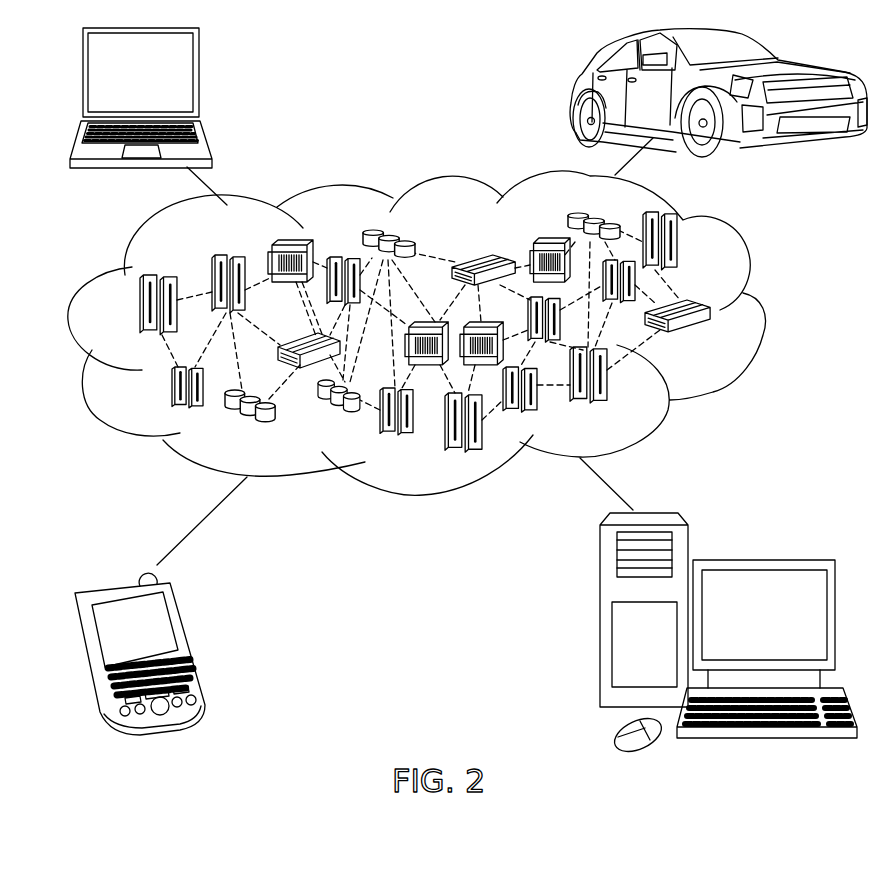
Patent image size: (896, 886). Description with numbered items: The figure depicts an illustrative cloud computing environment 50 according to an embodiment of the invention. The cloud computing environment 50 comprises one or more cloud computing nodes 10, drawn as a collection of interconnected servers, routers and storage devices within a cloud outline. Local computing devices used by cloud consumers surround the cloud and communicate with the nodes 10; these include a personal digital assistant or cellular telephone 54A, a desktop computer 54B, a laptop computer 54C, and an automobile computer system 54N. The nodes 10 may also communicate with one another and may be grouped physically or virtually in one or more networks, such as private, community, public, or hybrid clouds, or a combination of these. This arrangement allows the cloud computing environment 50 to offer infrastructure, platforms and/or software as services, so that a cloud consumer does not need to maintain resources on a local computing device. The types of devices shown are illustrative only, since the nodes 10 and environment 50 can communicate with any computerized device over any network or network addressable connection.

The cloud computing node 10 is at (713, 342).
The cloud computing environment 50 is at (760, 312).
The personal digital assistant (PDA) or cellular telephone 54A is at (193, 638).
The desktop computer 54B is at (762, 560).
The laptop computer 54C is at (199, 79).
The automobile computer system 54N is at (572, 96).